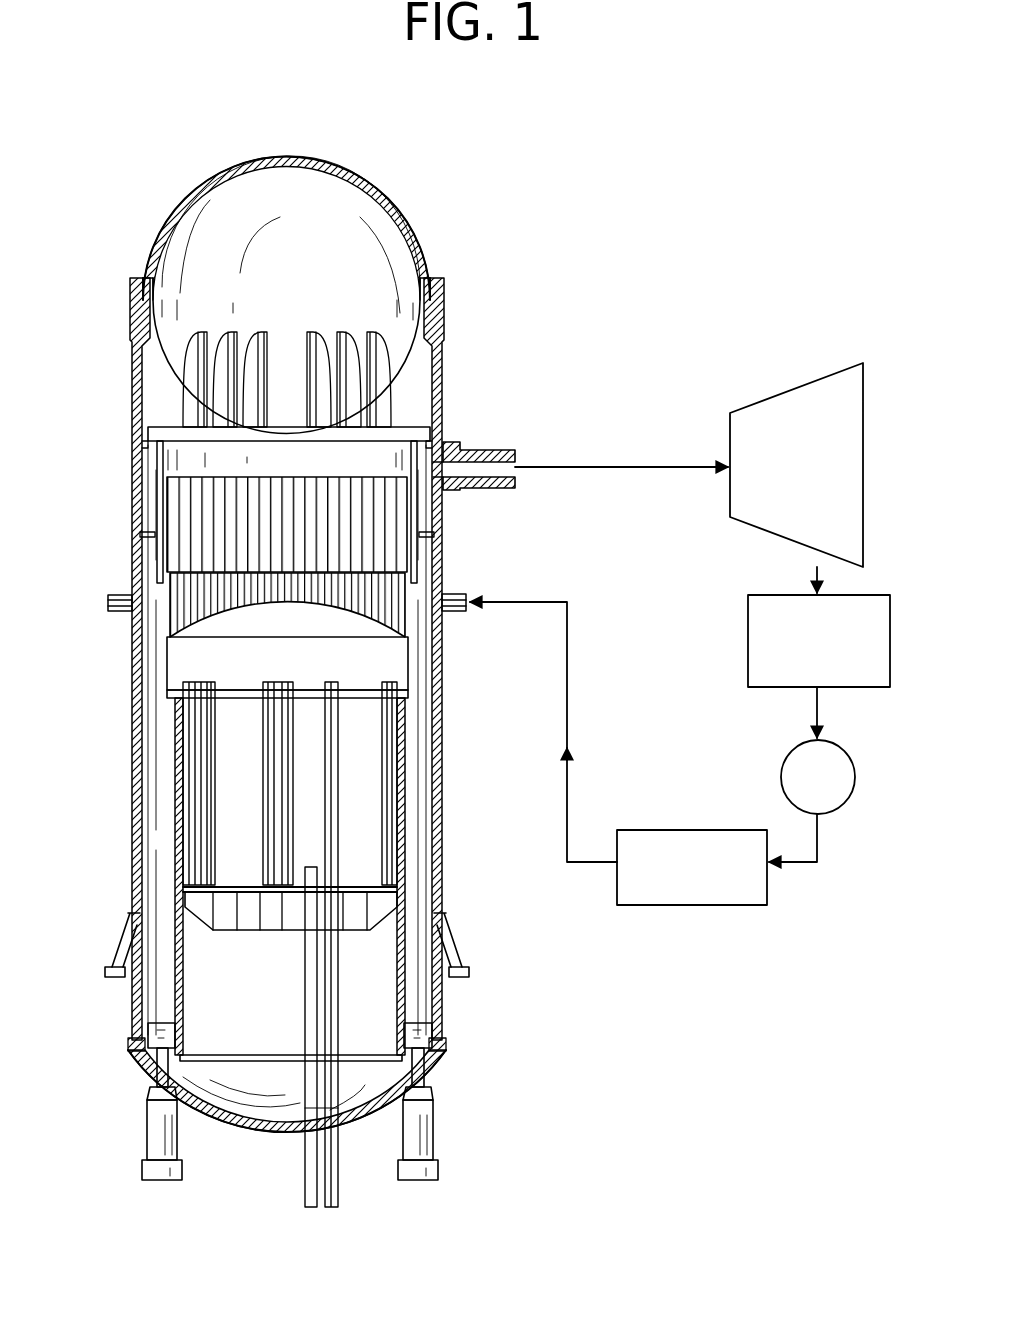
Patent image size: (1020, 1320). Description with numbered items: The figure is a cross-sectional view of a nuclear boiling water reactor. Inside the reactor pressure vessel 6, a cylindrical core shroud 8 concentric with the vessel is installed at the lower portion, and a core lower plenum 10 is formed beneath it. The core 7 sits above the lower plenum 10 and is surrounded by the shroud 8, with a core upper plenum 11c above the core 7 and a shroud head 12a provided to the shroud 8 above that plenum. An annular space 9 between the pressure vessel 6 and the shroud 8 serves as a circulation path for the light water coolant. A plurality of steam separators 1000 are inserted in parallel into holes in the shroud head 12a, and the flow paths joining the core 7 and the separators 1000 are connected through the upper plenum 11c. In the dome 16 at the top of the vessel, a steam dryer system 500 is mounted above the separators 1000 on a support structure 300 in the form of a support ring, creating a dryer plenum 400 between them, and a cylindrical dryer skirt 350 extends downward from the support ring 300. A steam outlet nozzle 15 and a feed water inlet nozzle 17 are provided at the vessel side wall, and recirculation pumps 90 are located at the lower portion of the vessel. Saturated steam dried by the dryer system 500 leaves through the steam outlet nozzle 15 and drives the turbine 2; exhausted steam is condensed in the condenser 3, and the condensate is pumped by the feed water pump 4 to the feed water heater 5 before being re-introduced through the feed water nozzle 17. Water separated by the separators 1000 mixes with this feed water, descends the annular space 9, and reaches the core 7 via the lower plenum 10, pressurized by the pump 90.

The turbine 2 is at (793, 387).
The condenser 3 is at (865, 688).
The feed water pump 4 is at (850, 797).
The feed water heater 5 is at (683, 830).
The reactor pressure vessel 6 is at (133, 783).
The core 7 is at (267, 802).
The core shroud 8 is at (403, 843).
The annular space 9 is at (150, 863).
The core lower plenum 10 is at (363, 990).
The core upper plenum 11c is at (400, 670).
The shroud head 12a is at (383, 630).
The steam outlet nozzle 15 is at (482, 447).
The dome 16 is at (405, 206).
The feed water inlet nozzle 17 is at (453, 587).
The recirculation pump 90 is at (430, 1132).
The support structure 300 is at (150, 427).
The dryer skirt 350 is at (157, 462).
The dryer plenum 400 is at (190, 470).
The steam dryer system 500 is at (353, 337).
The steam separators 1000 is at (373, 510).